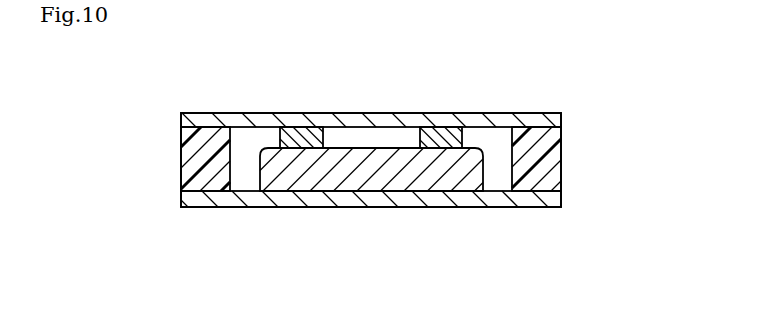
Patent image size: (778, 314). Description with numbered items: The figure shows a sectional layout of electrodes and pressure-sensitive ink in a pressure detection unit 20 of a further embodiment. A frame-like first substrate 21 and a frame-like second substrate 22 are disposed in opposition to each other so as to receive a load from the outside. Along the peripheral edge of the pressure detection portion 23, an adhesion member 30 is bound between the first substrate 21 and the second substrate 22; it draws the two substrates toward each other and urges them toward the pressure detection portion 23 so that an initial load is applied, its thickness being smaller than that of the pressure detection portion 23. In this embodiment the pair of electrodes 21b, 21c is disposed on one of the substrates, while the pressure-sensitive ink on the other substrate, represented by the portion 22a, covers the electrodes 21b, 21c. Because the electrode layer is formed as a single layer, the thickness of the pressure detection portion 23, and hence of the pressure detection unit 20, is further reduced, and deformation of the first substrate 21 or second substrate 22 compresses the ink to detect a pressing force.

The pressure detection unit 20 is at (134, 114).
The first substrate 21 is at (365, 124).
The electrode 21b is at (282, 129).
The upper protrusion (electrode) 21c is at (454, 128).
The second substrate 22 is at (282, 199).
The electrode 22a is at (387, 178).
The pressure detection portion 23 is at (371, 159).
The adhesion member 30 is at (186, 158).